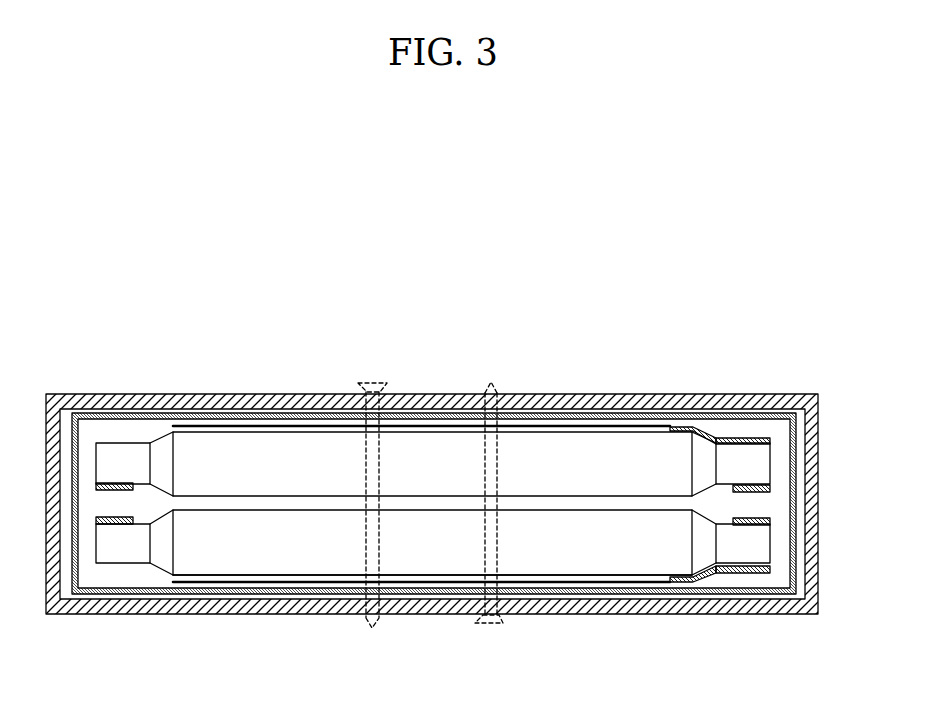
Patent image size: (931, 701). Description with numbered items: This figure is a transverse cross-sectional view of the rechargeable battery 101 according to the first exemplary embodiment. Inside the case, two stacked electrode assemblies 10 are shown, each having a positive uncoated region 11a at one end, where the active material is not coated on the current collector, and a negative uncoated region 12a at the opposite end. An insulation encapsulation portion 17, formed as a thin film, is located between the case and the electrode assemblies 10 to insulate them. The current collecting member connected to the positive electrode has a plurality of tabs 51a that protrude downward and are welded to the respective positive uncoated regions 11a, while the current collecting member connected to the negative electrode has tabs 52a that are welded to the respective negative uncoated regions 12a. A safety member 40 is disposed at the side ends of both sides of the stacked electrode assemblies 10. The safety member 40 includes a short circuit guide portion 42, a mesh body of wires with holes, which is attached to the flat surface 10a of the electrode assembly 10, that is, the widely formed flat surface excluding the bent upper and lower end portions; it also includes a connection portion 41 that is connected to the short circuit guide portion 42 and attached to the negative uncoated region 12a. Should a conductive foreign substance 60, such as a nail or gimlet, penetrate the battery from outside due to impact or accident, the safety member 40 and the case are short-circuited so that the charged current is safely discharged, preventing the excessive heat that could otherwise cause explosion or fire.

The rechargeable battery 101 is at (453, 246).
The electrode assembly 10 is at (577, 449).
The flat surface 10a is at (399, 583).
The positive uncoated region 11a is at (120, 457).
The negative uncoated region 12a is at (738, 458).
The insulation encapsulation portion 17 is at (240, 417).
The safety member 40 is at (677, 418).
The connection portion 41 is at (759, 440).
The short circuit guide portion 42 is at (615, 584).
The tabs 51a is at (96, 490).
The tabs 52a is at (770, 488).
The conductive foreign substance 60 is at (372, 383).